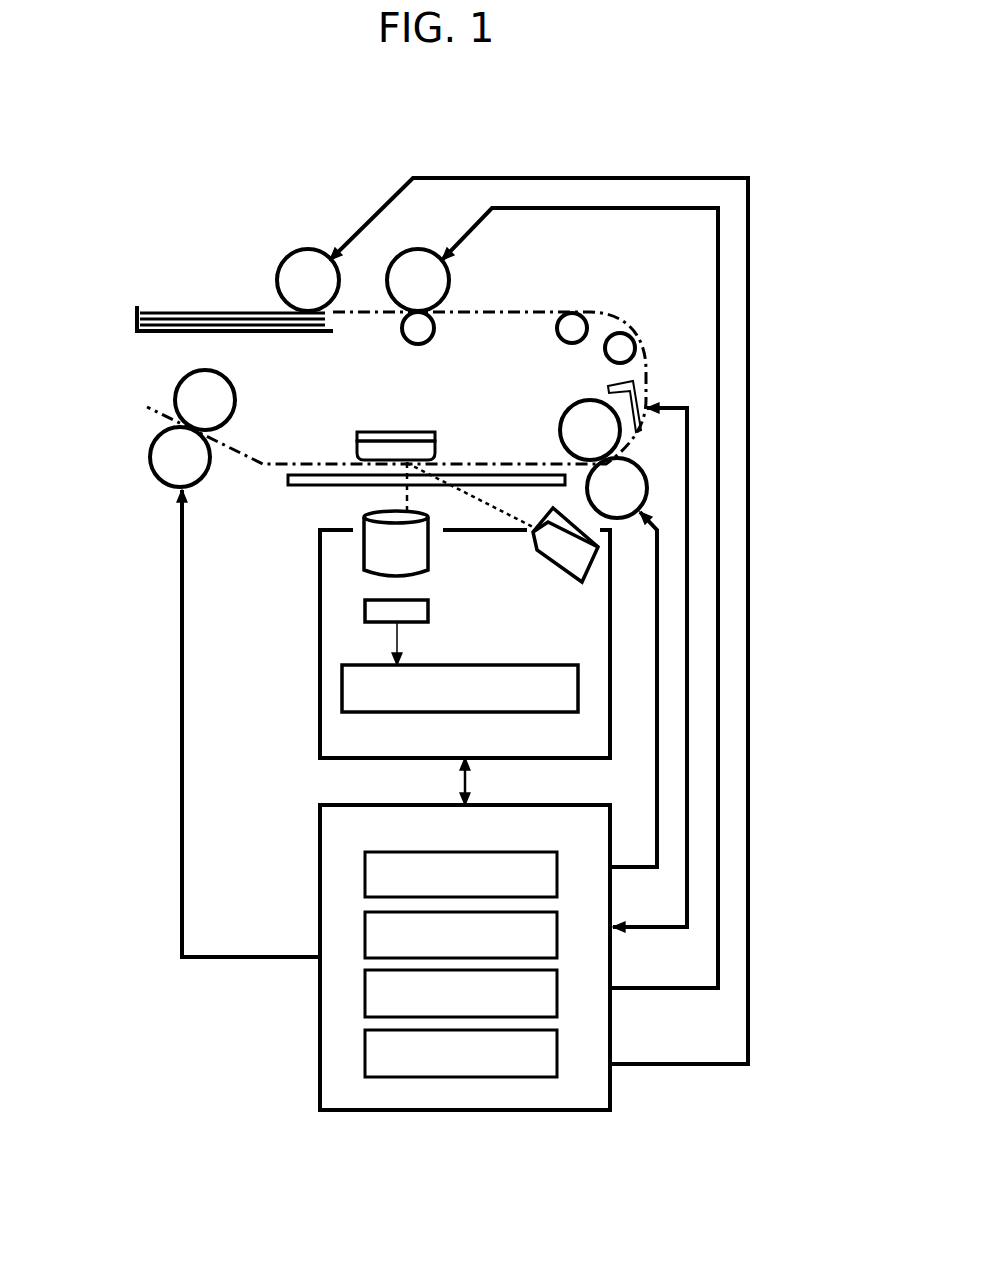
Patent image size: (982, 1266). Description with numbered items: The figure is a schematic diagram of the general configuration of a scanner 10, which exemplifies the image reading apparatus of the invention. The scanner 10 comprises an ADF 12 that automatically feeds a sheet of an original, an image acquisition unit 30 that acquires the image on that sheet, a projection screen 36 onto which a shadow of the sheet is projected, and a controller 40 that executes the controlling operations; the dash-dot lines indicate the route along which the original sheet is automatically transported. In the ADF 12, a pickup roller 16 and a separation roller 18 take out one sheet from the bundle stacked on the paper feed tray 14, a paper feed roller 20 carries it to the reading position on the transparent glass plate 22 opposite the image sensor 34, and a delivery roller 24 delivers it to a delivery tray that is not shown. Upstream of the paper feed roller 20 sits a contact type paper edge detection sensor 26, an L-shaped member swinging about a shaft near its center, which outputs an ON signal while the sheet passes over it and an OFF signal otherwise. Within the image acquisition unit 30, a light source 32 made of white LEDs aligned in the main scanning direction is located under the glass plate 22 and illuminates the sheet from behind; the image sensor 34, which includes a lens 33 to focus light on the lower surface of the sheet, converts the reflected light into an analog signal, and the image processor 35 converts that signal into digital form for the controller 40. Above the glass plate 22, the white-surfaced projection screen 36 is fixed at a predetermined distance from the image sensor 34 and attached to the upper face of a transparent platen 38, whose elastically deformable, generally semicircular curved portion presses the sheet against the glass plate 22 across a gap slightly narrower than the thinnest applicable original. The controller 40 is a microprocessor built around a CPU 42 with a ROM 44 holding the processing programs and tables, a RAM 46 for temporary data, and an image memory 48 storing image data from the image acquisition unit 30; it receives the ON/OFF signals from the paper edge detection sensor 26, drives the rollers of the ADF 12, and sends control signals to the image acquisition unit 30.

The scanner 10 is at (540, 130).
The ADF 12 is at (272, 182).
The paper feed tray 14 is at (135, 320).
The pickup roller 16 is at (290, 256).
The separation roller 18 is at (450, 282).
The paper feed roller 20 is at (563, 416).
The glass plate 22 is at (288, 480).
The delivery roller 24 is at (180, 386).
The paper edge detection sensor 26 is at (608, 387).
The image acquisition unit 30 is at (320, 556).
The light source 32 is at (575, 570).
The lens 33 is at (428, 545).
The image sensor 34 is at (428, 611).
The image processor 35 is at (500, 665).
The projection screen 36 is at (357, 436).
The platen 38 is at (357, 450).
The controller 40 is at (320, 811).
The CPU 42 is at (557, 876).
The ROM 44 is at (557, 936).
The RAM 46 is at (557, 995).
The image memory 48 is at (557, 1055).